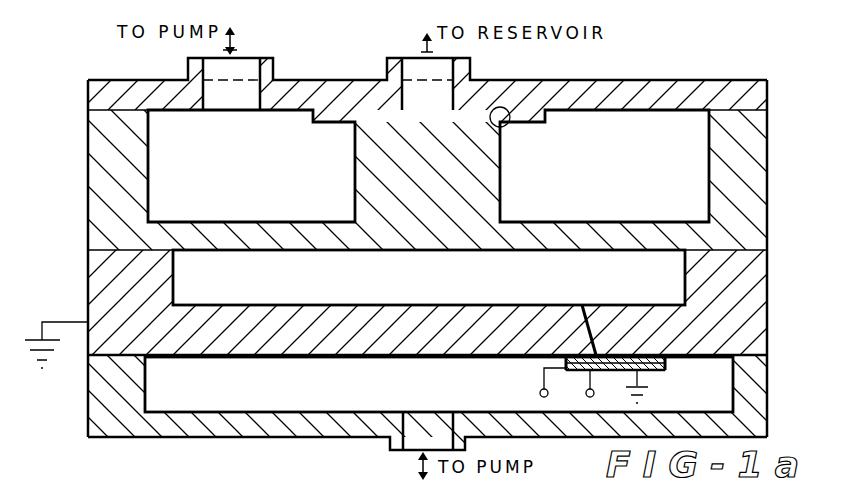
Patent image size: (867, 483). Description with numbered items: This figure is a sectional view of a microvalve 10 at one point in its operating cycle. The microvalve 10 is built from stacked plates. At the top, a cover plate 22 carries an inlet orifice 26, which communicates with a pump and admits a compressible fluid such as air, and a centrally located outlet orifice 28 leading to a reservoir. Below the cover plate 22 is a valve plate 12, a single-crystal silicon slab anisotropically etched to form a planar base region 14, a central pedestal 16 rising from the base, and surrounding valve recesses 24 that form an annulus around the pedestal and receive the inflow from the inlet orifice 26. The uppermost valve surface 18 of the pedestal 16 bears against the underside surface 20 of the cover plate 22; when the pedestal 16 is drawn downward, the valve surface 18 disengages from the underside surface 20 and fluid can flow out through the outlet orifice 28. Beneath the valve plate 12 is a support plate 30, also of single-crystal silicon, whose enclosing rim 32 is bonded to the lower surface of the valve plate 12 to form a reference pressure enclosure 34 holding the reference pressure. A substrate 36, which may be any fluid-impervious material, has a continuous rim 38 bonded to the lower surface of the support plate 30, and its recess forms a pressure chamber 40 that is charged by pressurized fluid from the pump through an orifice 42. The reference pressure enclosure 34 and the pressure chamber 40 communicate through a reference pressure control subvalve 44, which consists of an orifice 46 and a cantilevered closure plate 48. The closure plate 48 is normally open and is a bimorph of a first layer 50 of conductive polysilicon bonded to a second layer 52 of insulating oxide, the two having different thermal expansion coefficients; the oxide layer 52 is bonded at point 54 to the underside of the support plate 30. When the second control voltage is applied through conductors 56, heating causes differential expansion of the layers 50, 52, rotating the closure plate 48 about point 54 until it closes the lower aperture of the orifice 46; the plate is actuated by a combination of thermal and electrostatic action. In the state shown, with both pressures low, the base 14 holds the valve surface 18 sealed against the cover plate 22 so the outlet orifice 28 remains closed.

The microvalve 10 is at (718, 61).
The valve plate 12 is at (78, 115).
The planar base region 14 is at (305, 229).
The central pedestal 16 is at (488, 196).
The valve surface 18 is at (504, 126).
The underside surface 20 is at (546, 125).
The cover plate 22 is at (632, 90).
The valve recesses 24 is at (269, 178).
The inlet orifice 26 is at (244, 70).
The outlet orifice 28 is at (408, 63).
The support plate 30 is at (772, 250).
The enclosing rim 32 is at (164, 283).
The reference pressure enclosure 34 is at (446, 290).
The substrate 36 is at (80, 357).
The continuous rim 38 is at (140, 392).
The pressure chamber 40 is at (385, 388).
The orifice 42 is at (430, 423).
The reference pressure control subvalve 44 is at (538, 310).
The orifice 46 is at (604, 314).
The cantilevered closure plate 48 is at (658, 379).
The first layer 50 is at (667, 371).
The second layer 52 is at (679, 352).
The bonding point 54 is at (585, 354).
The conductors 56 is at (539, 393).